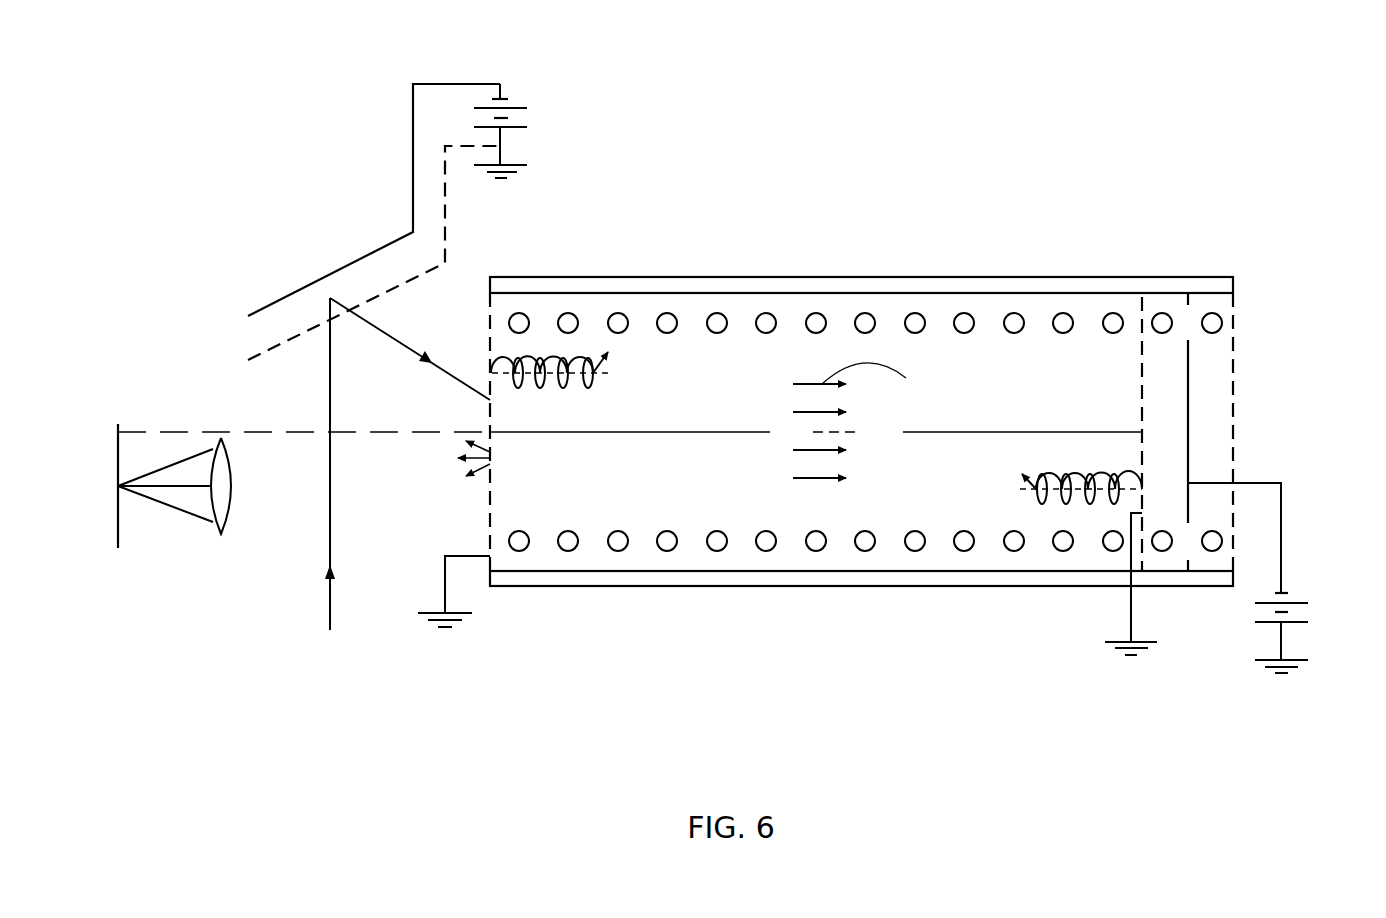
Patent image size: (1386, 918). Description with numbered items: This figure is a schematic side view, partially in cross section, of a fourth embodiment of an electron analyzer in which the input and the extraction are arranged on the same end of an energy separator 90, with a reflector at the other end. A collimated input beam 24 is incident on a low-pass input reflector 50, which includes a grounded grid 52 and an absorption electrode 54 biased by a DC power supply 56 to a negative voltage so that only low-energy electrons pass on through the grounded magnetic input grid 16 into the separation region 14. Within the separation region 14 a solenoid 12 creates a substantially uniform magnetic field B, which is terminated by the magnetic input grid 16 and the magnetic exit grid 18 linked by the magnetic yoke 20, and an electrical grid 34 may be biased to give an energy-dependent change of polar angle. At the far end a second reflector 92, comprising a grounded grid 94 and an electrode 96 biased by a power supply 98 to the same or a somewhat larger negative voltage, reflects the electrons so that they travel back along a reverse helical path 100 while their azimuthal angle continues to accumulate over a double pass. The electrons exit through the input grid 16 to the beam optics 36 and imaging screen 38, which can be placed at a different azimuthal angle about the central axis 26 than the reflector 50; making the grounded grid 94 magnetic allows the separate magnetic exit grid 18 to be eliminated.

The solenoid 12 is at (863, 313).
The separation region 14 is at (786, 463).
The magnetic input grid 16 is at (492, 470).
The magnetic exit grid 18 is at (1237, 323).
The magnetic yoke 20 is at (772, 277).
The collimated input beam 24 is at (330, 600).
The central axis 26 is at (727, 432).
The electrical grid 34 is at (553, 357).
The beam optics 36 is at (201, 524).
The imaging screen 38 is at (146, 517).
The low-pass input reflector 50 is at (333, 222).
The grounded grid 52 is at (313, 128).
The absorption electrode 54 is at (348, 200).
The DC power supply 56 is at (529, 94).
The energy separator 90 is at (960, 170).
The second reflector 92 is at (1200, 430).
The grounded grid 94 is at (1142, 367).
The electrode 96 is at (1190, 380).
The power supply 98 is at (1276, 578).
The reverse helical path 100 is at (1090, 507).